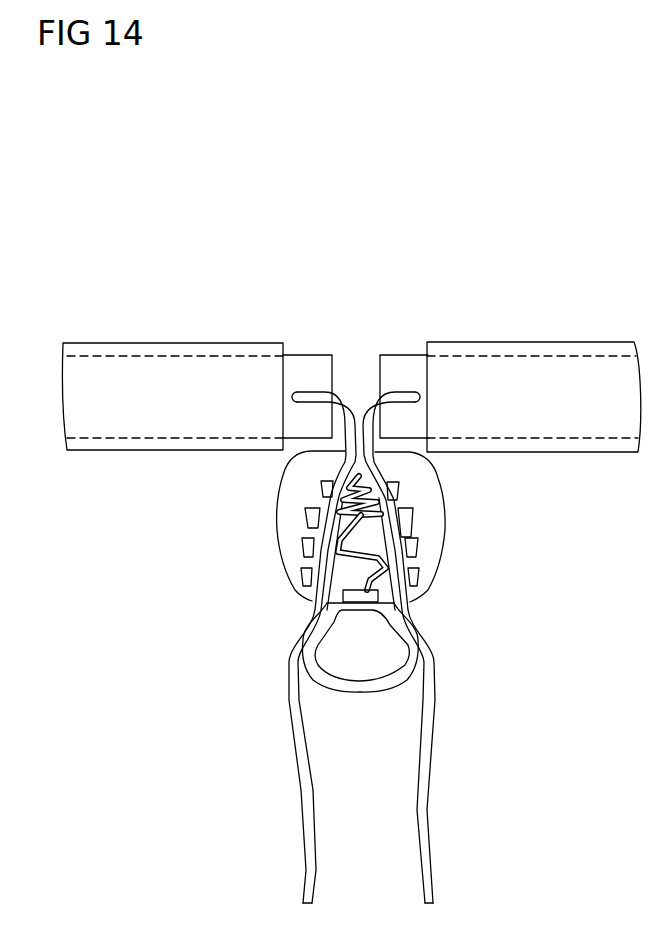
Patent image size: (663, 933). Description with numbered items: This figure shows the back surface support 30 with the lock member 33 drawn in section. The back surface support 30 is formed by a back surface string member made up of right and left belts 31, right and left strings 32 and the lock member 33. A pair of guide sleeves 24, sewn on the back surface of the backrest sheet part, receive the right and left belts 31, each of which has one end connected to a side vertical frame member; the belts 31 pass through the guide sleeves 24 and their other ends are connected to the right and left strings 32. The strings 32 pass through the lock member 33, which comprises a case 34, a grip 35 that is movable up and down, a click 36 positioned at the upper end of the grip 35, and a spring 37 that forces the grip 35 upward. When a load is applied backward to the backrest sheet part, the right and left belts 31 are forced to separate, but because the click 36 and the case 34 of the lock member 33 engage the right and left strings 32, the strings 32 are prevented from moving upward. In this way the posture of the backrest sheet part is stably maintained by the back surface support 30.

The guide sleeve 24 is at (119, 343).
The back surface support 30 is at (358, 256).
The belt 31 is at (308, 355).
The string 32 is at (300, 812).
The lock member 33 is at (306, 599).
The case 34 is at (430, 511).
The grip 35 is at (363, 692).
The click 36 is at (338, 497).
The spring 37 is at (340, 565).